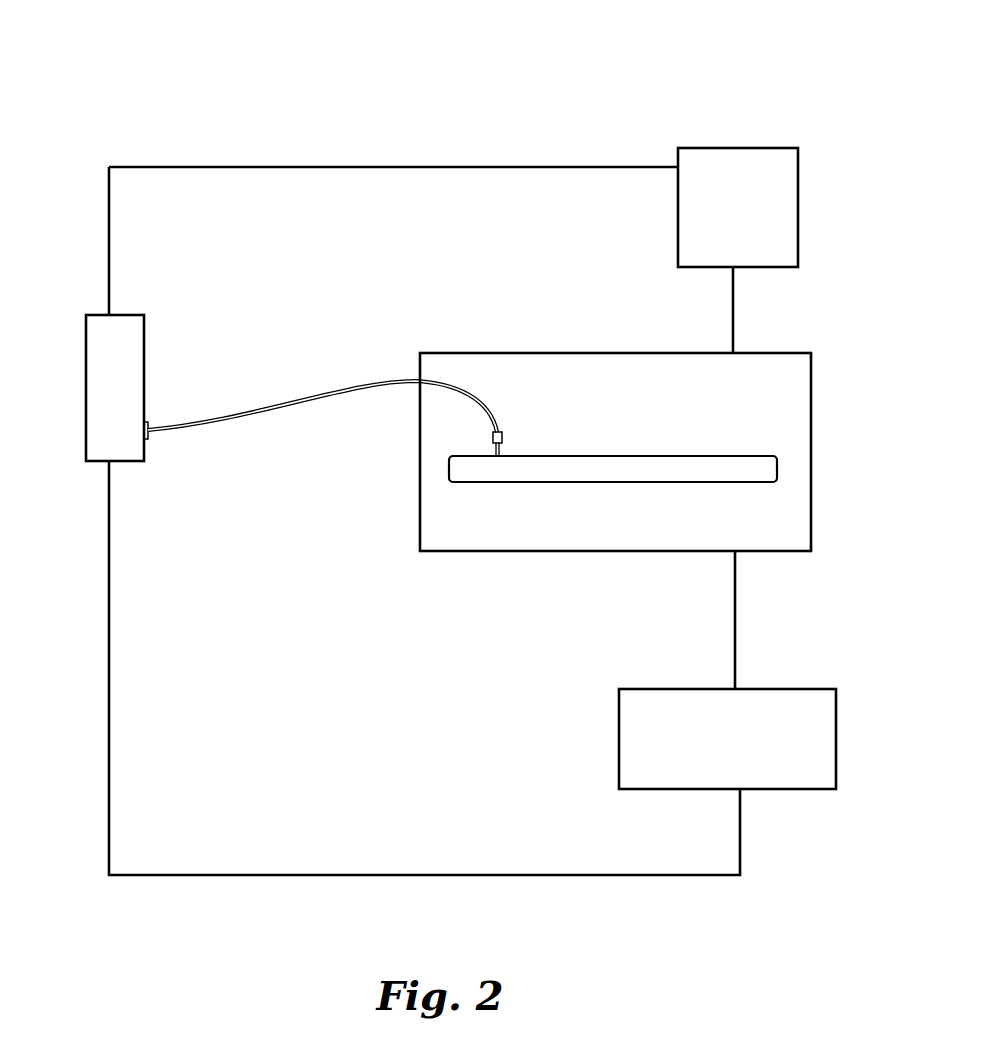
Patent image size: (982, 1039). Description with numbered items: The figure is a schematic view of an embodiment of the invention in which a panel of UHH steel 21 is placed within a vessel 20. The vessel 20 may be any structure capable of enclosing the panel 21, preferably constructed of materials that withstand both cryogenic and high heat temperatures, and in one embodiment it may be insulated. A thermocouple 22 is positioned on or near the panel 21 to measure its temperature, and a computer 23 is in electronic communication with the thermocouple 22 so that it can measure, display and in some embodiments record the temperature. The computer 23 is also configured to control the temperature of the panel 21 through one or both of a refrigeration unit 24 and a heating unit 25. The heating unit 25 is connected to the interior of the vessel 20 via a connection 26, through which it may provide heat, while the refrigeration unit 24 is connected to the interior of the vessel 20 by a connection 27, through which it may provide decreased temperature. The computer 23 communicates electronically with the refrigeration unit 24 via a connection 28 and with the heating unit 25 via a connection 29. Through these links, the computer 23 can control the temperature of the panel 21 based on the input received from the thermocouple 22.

The vessel 20 is at (475, 352).
The panel of UHH steel 21 is at (502, 483).
The thermocouple 22 is at (493, 453).
The computer 23 is at (93, 314).
The refrigeration unit 24 is at (763, 147).
The heating unit 25 is at (783, 790).
The connection 26 is at (737, 617).
The connection 27 is at (735, 318).
The connection 28 is at (240, 166).
The connection 29 is at (201, 877).